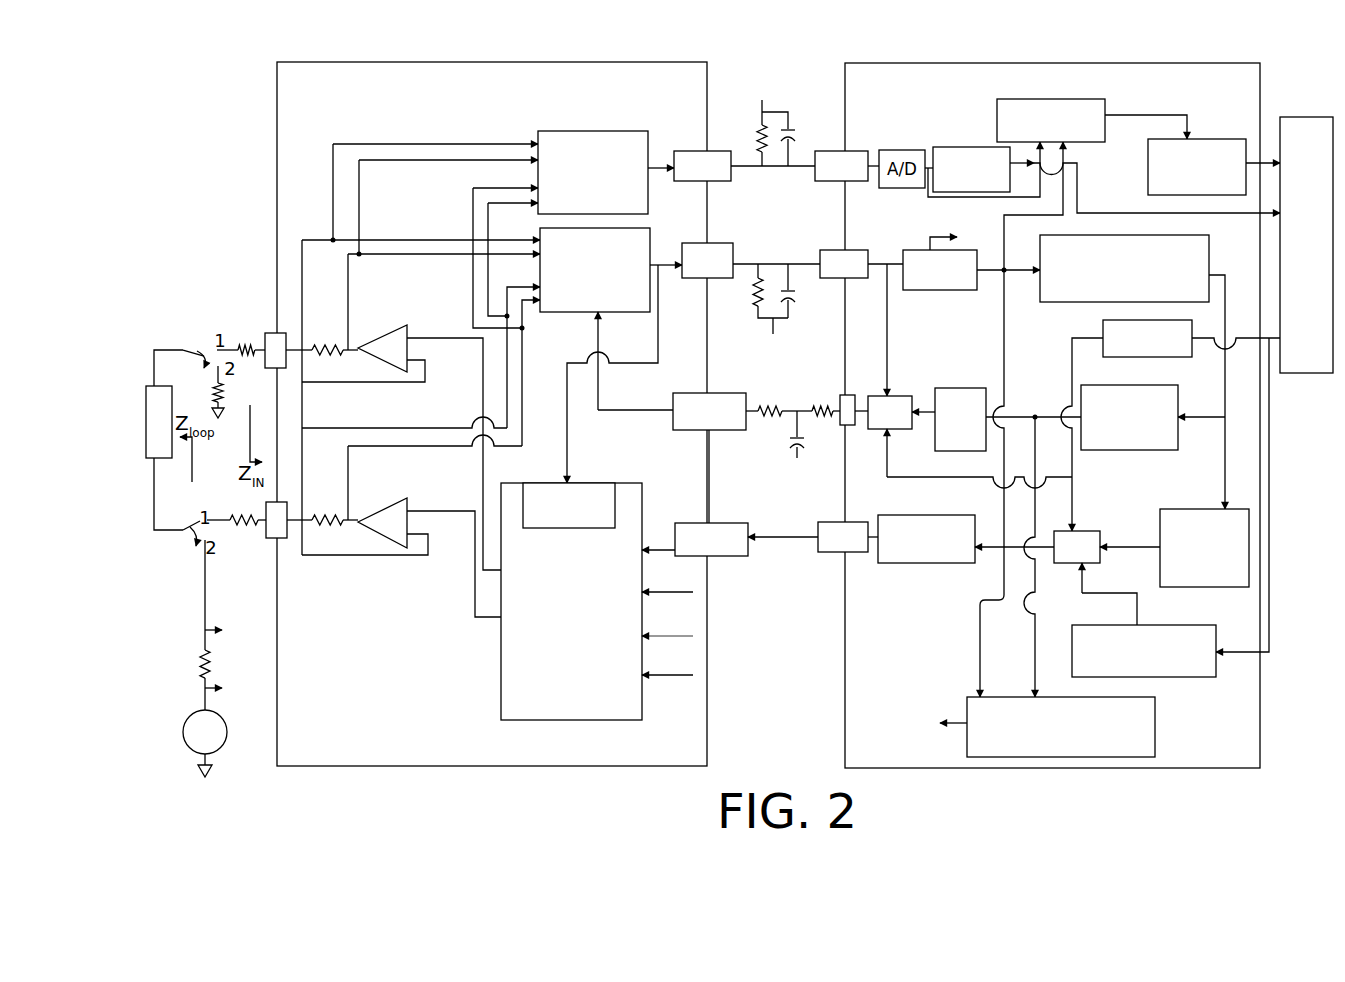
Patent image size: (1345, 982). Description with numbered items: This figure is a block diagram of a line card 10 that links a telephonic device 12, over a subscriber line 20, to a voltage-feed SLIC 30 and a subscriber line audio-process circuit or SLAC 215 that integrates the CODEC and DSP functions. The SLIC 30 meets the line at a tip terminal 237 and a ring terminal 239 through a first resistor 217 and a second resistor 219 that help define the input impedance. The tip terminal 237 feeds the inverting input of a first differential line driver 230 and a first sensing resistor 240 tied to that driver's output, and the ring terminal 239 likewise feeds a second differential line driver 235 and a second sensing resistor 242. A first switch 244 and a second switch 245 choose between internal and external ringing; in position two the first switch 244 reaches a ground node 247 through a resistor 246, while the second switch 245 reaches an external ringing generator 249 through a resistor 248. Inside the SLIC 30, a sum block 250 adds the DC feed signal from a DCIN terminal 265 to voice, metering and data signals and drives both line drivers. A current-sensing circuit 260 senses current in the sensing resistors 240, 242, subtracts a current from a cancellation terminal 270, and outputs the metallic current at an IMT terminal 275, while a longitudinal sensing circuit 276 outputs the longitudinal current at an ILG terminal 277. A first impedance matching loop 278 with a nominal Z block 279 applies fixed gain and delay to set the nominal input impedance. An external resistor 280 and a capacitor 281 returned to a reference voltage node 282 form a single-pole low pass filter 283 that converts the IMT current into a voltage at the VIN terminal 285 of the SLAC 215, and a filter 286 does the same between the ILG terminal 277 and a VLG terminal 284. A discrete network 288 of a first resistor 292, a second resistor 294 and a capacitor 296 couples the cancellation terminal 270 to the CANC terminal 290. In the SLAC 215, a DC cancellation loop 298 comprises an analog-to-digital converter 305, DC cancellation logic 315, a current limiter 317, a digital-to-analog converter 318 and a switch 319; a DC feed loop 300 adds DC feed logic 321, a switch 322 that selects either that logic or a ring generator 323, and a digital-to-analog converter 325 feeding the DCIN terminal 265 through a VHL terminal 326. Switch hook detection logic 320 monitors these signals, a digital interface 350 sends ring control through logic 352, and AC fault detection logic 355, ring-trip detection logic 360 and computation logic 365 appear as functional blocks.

The line card 10 is at (768, 449).
The telephonic device 12 is at (155, 385).
The subscriber line 20 is at (173, 348).
The SLIC 30 is at (485, 768).
The subscriber line audio-process circuit (SLAC) 215 is at (1057, 770).
The first resistor 217 is at (245, 343).
The second resistor 219 is at (245, 532).
The first differential line driver 230 is at (408, 327).
The second differential line driver 235 is at (407, 502).
The tip terminal 237 is at (277, 332).
The ring terminal 239 is at (285, 542).
The first sensing resistor 240 is at (330, 340).
The second sensing resistor 242 is at (333, 517).
The first switch 244 is at (187, 348).
The second switch 245 is at (185, 535).
The resistor 246 is at (228, 388).
The ground node 247 is at (222, 420).
The resistor 248 is at (198, 652).
The external ringing generator 249 is at (225, 743).
The sum block 250 is at (500, 627).
The current-sensing circuit 260 is at (575, 313).
The DCIN terminal 265 is at (722, 558).
The cancellation terminal (CANC) 270 is at (697, 432).
The IMT terminal 275 is at (720, 240).
The longitudinal sensing circuit 276 is at (572, 130).
The ILG terminal 277 is at (702, 150).
The first impedance matching loop 278 is at (567, 420).
The nominal Z block 279 is at (525, 488).
The external resistor 280 is at (750, 282).
The capacitor 281 is at (797, 280).
The reference voltage node 282 is at (790, 86).
The single-pole low pass filter 283 is at (772, 250).
The VLG terminal 284 is at (852, 150).
The VIN terminal 285 is at (832, 248).
The filter 286 is at (750, 123).
The discrete network 288 is at (760, 428).
The CANC terminal 290 is at (847, 393).
The first resistor 292 is at (773, 403).
The second resistor 294 is at (828, 420).
The capacitor 296 is at (803, 447).
The DC cancellation loop 298 is at (1215, 316).
The DC feed loop 300 is at (1126, 537).
The analog-to-digital converter 305 is at (963, 291).
The DC cancellation logic 315 is at (1085, 303).
The current limiter 317 is at (1110, 450).
The digital-to-analog converter 318 is at (957, 388).
The switch 319 is at (897, 395).
The switch hook detection logic 320 is at (967, 733).
The DC feed logic 321 is at (1177, 588).
The switch 322 is at (1078, 530).
The ring generator 323 is at (1173, 677).
The digital-to-analog converter 325 is at (920, 563).
The VHL terminal 326 is at (837, 553).
The digital interface 350 is at (1330, 115).
The logic 352 is at (1190, 355).
The AC fault detection logic 355 is at (952, 146).
The ring-trip detection logic 360 is at (1147, 155).
The computation logic 365 is at (997, 113).